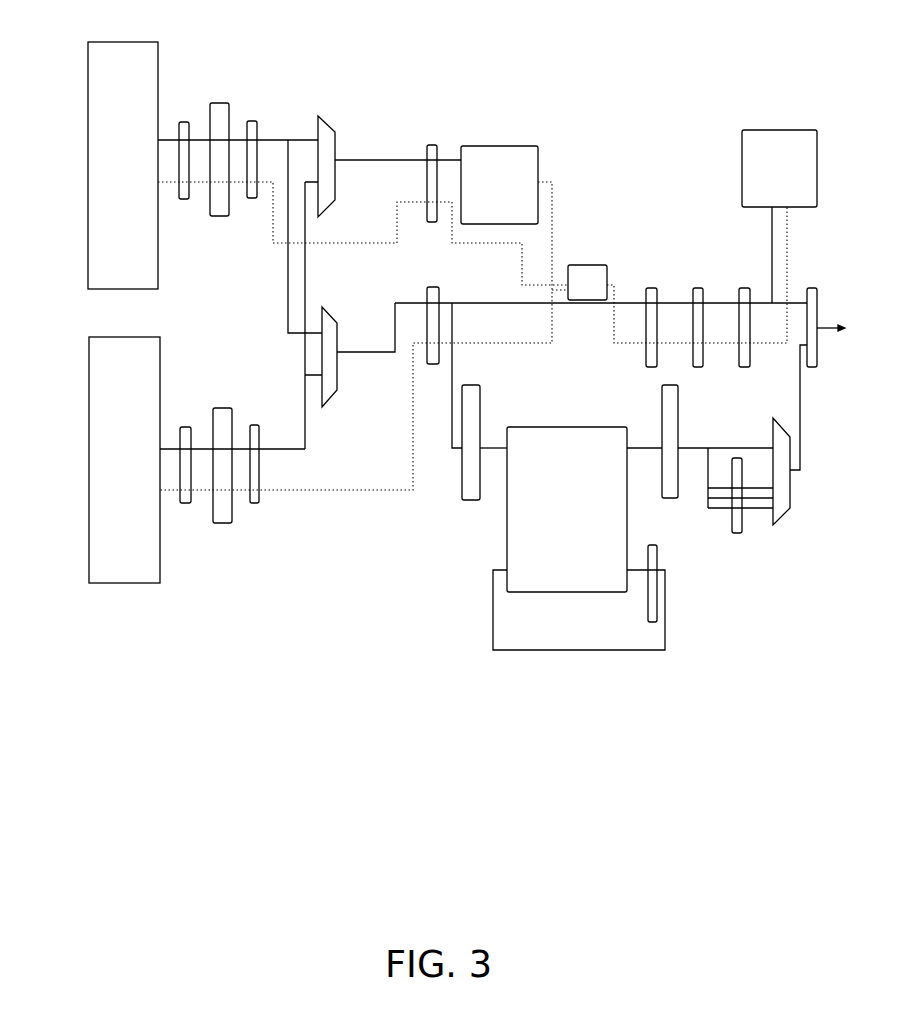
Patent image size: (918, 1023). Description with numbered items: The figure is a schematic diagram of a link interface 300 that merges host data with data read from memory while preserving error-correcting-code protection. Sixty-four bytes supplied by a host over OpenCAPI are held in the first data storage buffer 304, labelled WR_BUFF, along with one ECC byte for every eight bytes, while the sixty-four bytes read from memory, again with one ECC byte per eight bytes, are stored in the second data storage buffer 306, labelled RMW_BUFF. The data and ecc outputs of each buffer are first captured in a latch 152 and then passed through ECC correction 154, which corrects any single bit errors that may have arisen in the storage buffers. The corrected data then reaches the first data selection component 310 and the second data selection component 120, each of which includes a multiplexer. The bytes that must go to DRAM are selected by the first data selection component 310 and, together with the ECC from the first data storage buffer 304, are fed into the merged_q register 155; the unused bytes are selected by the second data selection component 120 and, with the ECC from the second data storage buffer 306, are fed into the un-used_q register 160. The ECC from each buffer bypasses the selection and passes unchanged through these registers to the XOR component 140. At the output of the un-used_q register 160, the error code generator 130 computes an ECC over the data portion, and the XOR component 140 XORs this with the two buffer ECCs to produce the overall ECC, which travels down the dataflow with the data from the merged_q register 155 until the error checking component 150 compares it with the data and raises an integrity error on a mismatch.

The link interface 300 is at (112, 684).
The first data storage buffer 304 is at (88, 184).
The second data storage buffer 306 is at (88, 479).
The latch 152 is at (181, 121).
The ECC correction 154 is at (224, 102).
The second data selection component 120 is at (328, 118).
The error code generator 130 is at (513, 145).
The XOR component 140 is at (588, 265).
The error checking component 150 is at (766, 130).
The merged_q register 155 is at (436, 363).
The un-used_q register 160 is at (426, 194).
The first data selection component 310 is at (336, 396).